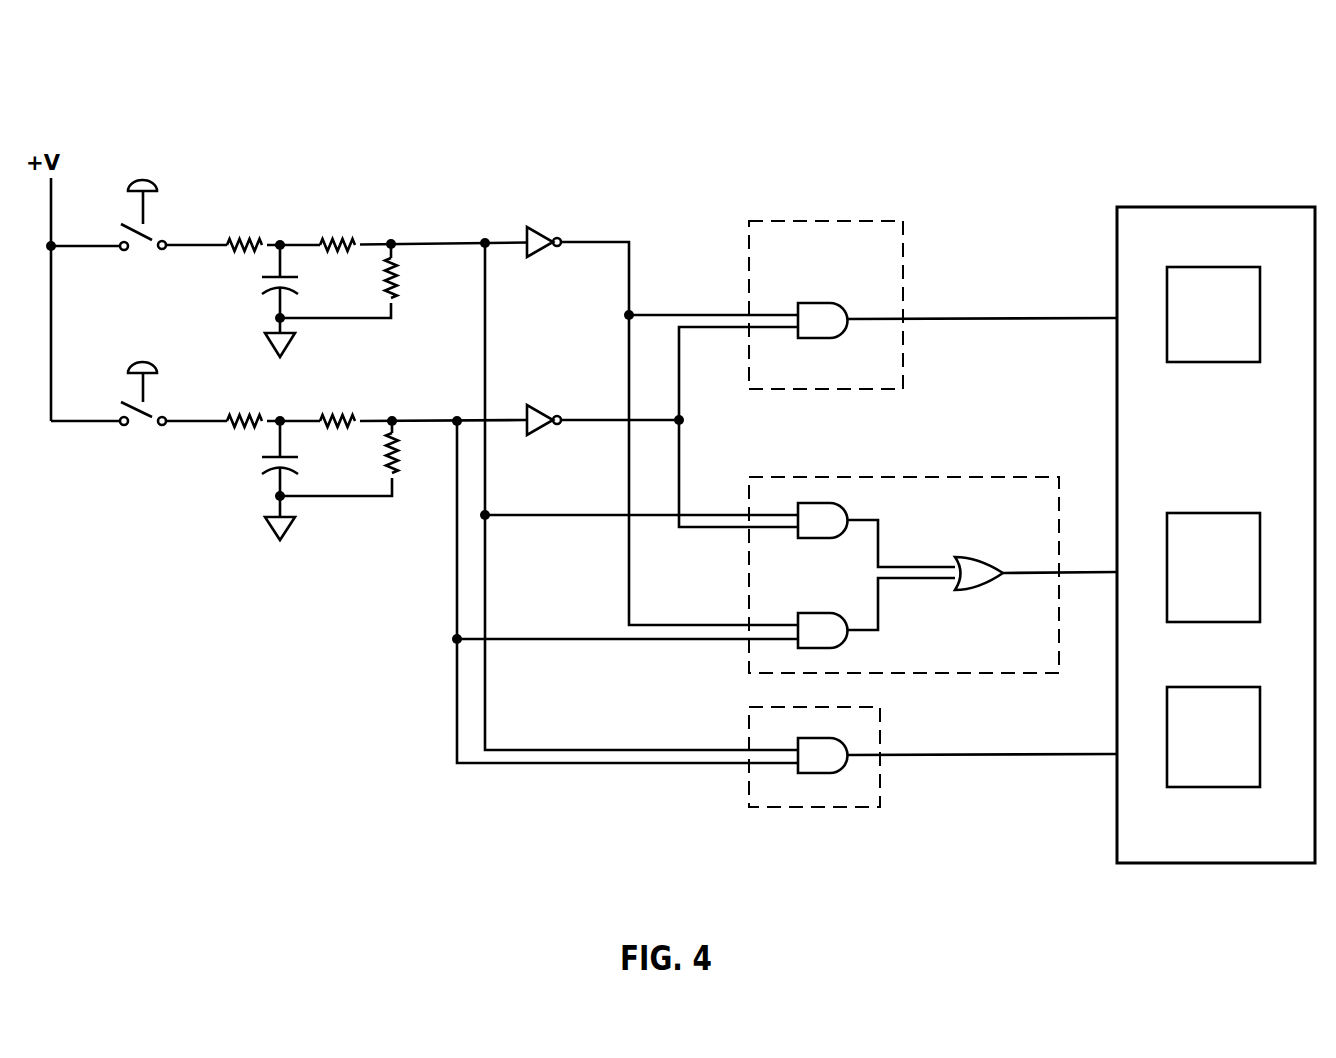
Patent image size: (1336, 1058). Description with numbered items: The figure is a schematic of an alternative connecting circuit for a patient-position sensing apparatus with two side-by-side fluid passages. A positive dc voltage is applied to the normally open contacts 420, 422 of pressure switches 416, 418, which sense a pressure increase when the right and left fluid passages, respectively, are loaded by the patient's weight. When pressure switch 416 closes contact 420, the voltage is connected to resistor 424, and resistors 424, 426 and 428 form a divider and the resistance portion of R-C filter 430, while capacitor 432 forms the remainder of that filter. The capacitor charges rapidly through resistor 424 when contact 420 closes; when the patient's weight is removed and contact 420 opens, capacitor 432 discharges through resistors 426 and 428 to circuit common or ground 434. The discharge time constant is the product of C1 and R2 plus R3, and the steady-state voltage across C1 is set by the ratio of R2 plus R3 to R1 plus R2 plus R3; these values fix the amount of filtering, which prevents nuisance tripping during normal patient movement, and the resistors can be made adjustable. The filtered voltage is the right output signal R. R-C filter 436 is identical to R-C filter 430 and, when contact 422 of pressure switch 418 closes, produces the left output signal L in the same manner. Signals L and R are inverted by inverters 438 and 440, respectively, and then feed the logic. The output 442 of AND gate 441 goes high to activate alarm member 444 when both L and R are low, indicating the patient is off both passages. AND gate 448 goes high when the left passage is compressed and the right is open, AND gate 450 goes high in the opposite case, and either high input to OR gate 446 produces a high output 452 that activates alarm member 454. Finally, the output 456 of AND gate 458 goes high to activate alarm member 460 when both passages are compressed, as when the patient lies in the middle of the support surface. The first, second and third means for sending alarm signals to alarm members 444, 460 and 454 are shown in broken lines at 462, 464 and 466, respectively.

The pressure switch 416 is at (174, 450).
The pressure switch 418 is at (130, 172).
The normally open contact 420 is at (124, 426).
The normally open contact 422 is at (124, 251).
The resistor 424 is at (244, 419).
The resistor 426 is at (336, 418).
The resistor 428 is at (427, 453).
The R-C filter 430 is at (326, 527).
The capacitor 432 is at (262, 457).
The circuit common or ground 434 is at (275, 546).
The R-C filter 436 is at (348, 176).
The inverter 438 is at (541, 237).
The inverter 440 is at (540, 417).
The AND gate 441 is at (826, 303).
The output 442 is at (967, 316).
The alarm member 444 is at (1224, 267).
The OR gate 446 is at (986, 558).
The AND gate 448 is at (838, 503).
The AND gate 450 is at (852, 572).
The output 452 is at (1089, 578).
The alarm member 454 is at (1230, 513).
The output 456 is at (958, 752).
The AND gate 458 is at (849, 746).
The alarm member 460 is at (1228, 687).
The first means for sending alarm signals 462 is at (842, 279).
The second means for sending alarm signals 464 is at (851, 766).
The third means for sending alarm signals 466 is at (904, 555).
The left output signal L is at (429, 240).
The right output signal R is at (428, 418).
The resistor R1 is at (223, 444).
The resistor R2 is at (324, 447).
The resistor R3 is at (369, 460).
The capacitor C1 is at (315, 474).